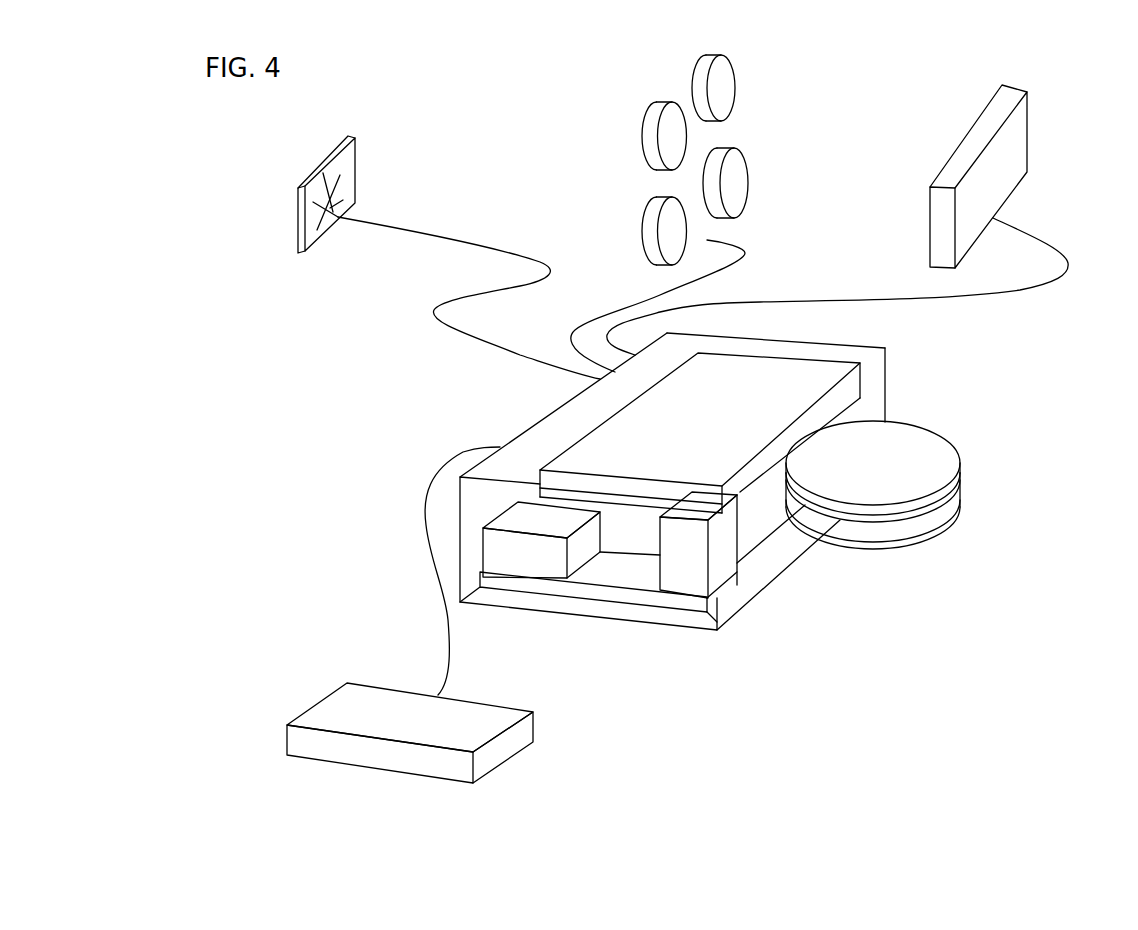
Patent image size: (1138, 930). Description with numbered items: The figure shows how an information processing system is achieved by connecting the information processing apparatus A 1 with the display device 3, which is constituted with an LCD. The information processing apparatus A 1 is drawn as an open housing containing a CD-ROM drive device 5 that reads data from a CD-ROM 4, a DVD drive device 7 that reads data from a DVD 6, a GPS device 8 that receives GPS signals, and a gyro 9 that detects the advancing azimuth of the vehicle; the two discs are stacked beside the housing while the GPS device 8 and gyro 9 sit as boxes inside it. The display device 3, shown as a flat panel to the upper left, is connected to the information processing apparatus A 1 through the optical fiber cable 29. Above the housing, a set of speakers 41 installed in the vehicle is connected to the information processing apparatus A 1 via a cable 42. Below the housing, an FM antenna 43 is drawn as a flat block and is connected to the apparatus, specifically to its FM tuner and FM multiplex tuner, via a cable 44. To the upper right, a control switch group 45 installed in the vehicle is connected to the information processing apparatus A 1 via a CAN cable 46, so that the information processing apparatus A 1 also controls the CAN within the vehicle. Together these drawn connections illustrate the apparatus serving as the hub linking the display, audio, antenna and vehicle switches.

The information processing apparatus A 1 is at (521, 418).
The display device 3 is at (298, 192).
The CD-ROM 4 is at (920, 450).
The CD-ROM drive device 5 is at (807, 382).
The DVD 6 is at (922, 522).
The DVD drive device 7 is at (753, 520).
The GPS device 8 is at (533, 562).
The gyro 9 is at (688, 567).
The optical fiber cable 29 is at (483, 240).
The speakers 41 is at (624, 158).
The cable 42 is at (605, 305).
The FM antenna 43 is at (500, 748).
The cable 44 is at (433, 577).
The control switch group 45 is at (1002, 182).
The CAN cable 46 is at (900, 293).